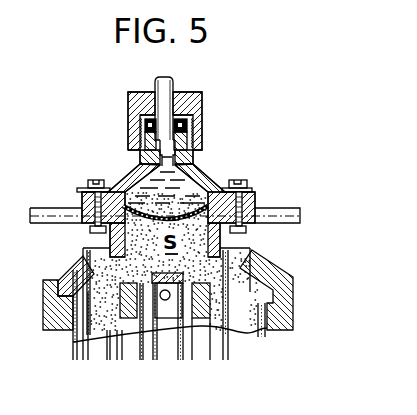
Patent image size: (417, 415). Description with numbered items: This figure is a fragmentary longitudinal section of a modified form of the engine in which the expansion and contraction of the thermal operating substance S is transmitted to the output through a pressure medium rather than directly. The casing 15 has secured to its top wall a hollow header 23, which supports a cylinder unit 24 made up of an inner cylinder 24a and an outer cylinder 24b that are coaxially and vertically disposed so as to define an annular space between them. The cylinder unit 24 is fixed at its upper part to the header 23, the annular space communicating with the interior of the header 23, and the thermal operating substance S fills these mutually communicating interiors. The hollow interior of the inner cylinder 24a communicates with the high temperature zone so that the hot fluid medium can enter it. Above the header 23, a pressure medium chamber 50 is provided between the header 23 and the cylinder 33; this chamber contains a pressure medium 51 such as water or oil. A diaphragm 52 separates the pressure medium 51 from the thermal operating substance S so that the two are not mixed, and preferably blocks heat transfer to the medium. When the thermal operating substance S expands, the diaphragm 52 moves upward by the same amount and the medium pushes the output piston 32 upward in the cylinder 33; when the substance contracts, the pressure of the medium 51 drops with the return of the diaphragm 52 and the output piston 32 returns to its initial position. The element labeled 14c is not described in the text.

The output piston 32 is at (161, 88).
The cylinder 33 is at (140, 108).
The pressure medium chamber 50 is at (204, 172).
The pressure medium 51 is at (150, 196).
The diaphragm 52 is at (196, 204).
The casing 15 is at (287, 208).
The cup wall 14c is at (125, 279).
The hollow header 23 is at (266, 268).
The cylinder unit 24 is at (133, 345).
The inner cylinder 24a is at (228, 352).
The outer cylinder 24b is at (266, 350).